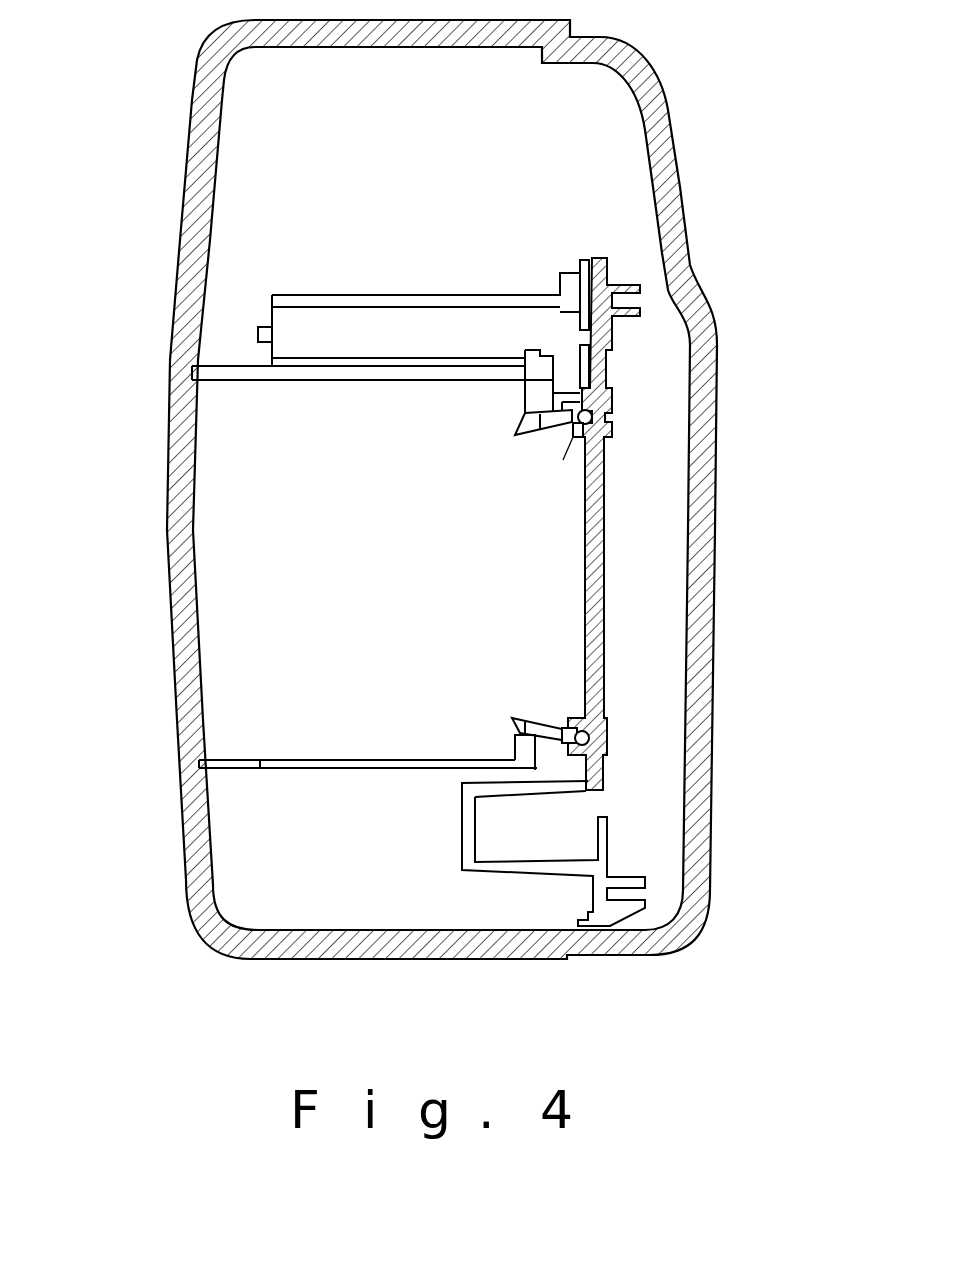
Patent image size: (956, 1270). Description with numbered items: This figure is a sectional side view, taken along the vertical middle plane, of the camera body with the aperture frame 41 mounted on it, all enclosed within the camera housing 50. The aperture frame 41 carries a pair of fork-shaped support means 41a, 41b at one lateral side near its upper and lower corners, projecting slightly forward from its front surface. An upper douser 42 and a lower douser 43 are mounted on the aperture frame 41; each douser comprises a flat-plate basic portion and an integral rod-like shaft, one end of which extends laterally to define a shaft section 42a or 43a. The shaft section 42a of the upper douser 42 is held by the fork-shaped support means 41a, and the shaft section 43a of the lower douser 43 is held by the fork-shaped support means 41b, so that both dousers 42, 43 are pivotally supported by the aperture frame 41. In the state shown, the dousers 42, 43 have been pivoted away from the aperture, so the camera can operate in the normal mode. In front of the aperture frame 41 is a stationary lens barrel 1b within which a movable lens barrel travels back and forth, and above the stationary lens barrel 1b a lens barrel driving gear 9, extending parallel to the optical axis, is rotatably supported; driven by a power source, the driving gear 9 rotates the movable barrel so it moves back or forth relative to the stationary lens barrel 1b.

The camera housing 50 is at (178, 528).
The lens barrel driving gear 9 is at (353, 316).
The stationary lens barrel 1b is at (235, 758).
The aperture frame 41 is at (607, 550).
The fork-shaped support means 41a is at (576, 440).
The fork-shaped support means 41b is at (576, 717).
The upper douser 42 is at (540, 432).
The shaft section 42a is at (593, 420).
The lower douser 43 is at (516, 718).
The shaft section 43a is at (605, 728).